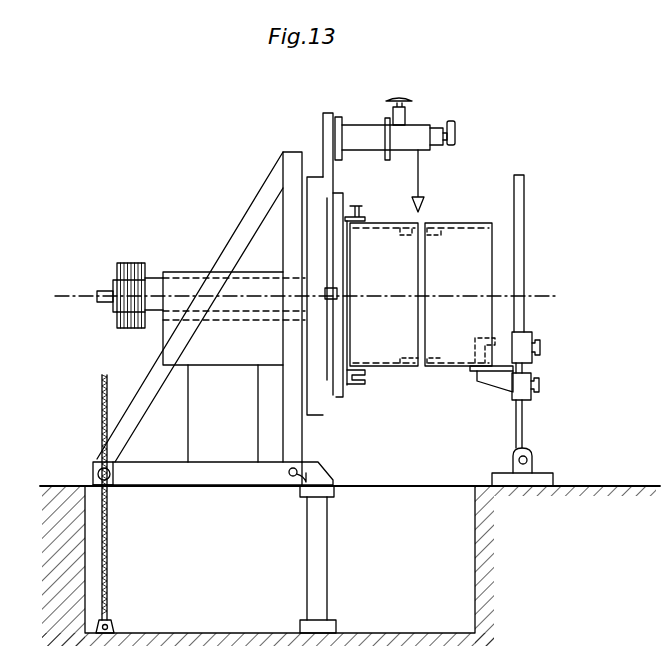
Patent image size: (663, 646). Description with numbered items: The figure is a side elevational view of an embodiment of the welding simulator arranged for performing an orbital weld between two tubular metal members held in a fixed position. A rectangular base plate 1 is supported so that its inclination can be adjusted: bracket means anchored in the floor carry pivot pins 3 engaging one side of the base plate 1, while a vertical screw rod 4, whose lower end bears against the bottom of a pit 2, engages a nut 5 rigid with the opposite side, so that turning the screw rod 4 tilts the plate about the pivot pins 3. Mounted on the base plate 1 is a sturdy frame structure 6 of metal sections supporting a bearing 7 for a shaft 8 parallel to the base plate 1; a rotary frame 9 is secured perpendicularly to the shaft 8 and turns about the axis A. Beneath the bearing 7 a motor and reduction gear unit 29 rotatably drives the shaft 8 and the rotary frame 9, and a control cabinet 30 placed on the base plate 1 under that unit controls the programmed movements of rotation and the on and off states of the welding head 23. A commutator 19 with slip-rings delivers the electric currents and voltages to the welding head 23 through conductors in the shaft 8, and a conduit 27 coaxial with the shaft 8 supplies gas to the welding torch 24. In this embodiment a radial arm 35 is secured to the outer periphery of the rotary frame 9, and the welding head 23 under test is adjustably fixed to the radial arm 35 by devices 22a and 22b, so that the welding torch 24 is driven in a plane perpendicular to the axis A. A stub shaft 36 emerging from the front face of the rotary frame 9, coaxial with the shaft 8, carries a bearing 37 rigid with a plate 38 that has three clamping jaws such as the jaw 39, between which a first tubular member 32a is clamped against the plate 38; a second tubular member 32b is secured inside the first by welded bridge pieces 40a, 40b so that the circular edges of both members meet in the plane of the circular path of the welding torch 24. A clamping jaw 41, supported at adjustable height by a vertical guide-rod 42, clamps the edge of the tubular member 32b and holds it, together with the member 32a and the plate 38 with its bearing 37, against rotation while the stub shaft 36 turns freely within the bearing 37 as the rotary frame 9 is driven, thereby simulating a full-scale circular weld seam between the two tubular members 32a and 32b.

The base plate 1 is at (177, 462).
The pit 2 is at (350, 566).
The pivot pins 3 is at (293, 478).
The screw rod 4 is at (102, 404).
The nut 5 is at (90, 467).
The frame structure 6 is at (292, 191).
The bearing 7 is at (197, 276).
The shaft 8 is at (155, 282).
The rotary frame 9 is at (313, 177).
The commutator 19 is at (132, 263).
The securing device 22a is at (404, 112).
The securing device 22b is at (441, 134).
The welding head 23 is at (402, 137).
The welding torch 24 is at (421, 183).
The conduit 27 is at (107, 292).
The motor and reduction gear unit 29 is at (223, 318).
The control cabinet 30 is at (223, 413).
The first tubular member 32a is at (381, 353).
The second tubular member 32b is at (458, 353).
The radial arm 35 is at (331, 178).
The stub shaft 36 is at (340, 291).
The bearing 37 is at (331, 273).
The plate 38 is at (340, 352).
The clamping jaw 39 is at (362, 212).
The bridge piece 40a is at (407, 234).
The bridge piece 40b is at (445, 358).
The clamping jaw 41 is at (506, 351).
The vertical guide-rod 42 is at (520, 223).
The axis of rotation A is at (63, 300).